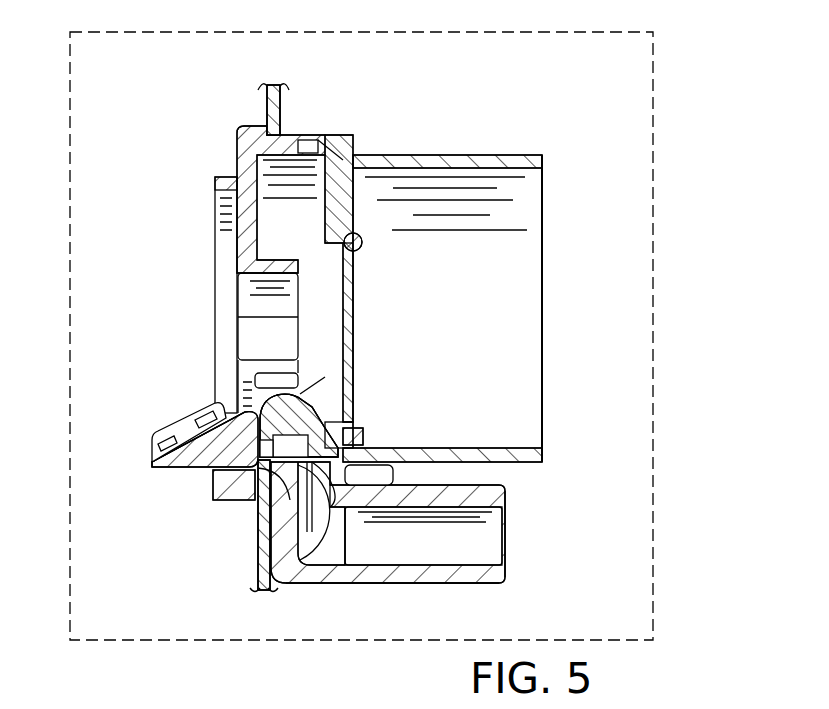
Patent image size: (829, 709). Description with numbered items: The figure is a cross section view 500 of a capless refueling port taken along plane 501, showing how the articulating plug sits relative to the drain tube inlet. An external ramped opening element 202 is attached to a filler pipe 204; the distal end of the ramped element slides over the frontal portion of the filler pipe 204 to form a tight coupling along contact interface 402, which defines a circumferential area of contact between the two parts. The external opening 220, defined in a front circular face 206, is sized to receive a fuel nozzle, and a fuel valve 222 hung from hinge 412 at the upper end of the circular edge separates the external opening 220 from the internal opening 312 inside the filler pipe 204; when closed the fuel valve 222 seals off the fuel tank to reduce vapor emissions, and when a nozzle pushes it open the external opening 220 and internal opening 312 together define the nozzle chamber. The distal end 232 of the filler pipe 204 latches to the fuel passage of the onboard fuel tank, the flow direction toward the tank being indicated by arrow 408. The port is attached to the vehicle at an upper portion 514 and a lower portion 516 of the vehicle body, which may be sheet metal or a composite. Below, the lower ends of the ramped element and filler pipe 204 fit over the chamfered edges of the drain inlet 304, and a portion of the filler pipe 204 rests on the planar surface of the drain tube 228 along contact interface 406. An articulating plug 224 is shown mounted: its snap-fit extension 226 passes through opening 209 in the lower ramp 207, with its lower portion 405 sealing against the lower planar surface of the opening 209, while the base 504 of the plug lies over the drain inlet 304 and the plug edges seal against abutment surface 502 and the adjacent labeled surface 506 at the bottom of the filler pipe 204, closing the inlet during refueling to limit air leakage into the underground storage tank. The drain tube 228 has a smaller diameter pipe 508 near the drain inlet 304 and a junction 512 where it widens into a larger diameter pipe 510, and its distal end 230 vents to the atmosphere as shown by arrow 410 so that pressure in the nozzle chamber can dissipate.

The cross section view 500 is at (176, 132).
The plane 501 is at (653, 450).
The external ramped opening element 202 is at (313, 137).
The filler pipe 204 is at (448, 152).
The front circular face 206 is at (217, 245).
The lower ramp 207 is at (152, 467).
The opening 209 is at (152, 450).
The external opening 220 is at (266, 337).
The fuel valve 222 is at (348, 298).
The articulating plug 224 is at (300, 396).
The snap-fit extension 226 is at (207, 418).
The drain tube 228 is at (480, 588).
The distal end 230 is at (507, 515).
The distal end 232 is at (543, 200).
The drain inlet 304 is at (312, 492).
The internal opening 312 is at (453, 288).
The contact interface 402 is at (318, 156).
The lower portion 405 is at (217, 492).
The contact interface 406 is at (373, 466).
The arrow 408 is at (565, 308).
The arrow 410 is at (533, 535).
The hinge 412 is at (358, 236).
The abutment surface 502 is at (268, 482).
The base 504 is at (352, 441).
The gasket 506 is at (338, 446).
The smaller diameter pipe 508 is at (322, 518).
The larger diameter pipe 510 is at (437, 580).
The junction 512 is at (302, 570).
The upper portion 514 is at (285, 102).
The lower portion 516 is at (255, 577).